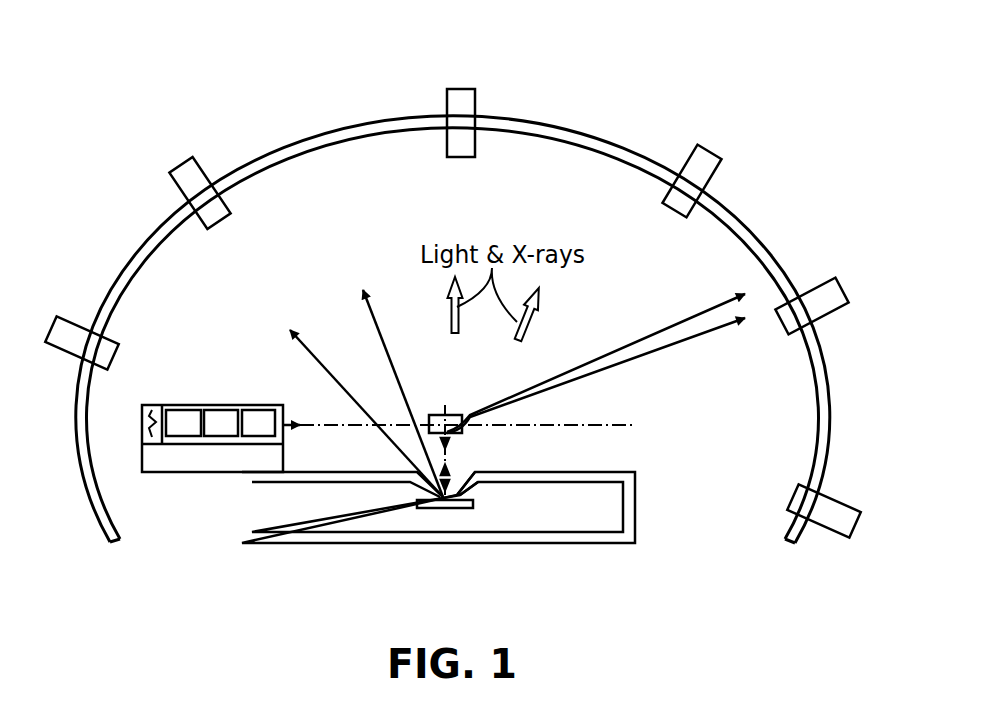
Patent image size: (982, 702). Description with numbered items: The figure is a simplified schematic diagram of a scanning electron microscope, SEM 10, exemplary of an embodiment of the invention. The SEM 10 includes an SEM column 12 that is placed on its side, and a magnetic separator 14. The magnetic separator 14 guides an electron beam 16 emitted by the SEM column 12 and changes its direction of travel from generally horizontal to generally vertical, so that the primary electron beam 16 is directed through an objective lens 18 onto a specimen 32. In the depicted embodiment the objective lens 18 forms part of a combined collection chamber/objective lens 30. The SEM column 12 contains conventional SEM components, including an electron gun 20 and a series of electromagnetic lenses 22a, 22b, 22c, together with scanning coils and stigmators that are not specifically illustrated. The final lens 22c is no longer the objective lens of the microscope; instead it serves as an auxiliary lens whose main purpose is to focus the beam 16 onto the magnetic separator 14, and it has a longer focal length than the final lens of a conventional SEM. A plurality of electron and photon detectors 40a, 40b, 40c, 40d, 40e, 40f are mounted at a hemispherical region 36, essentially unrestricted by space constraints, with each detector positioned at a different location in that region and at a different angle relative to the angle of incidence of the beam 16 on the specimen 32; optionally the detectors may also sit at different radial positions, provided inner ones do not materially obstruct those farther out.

The SEM 10 is at (163, 80).
The SEM column 12 is at (185, 457).
The magnetic separator 14 is at (462, 433).
The electron beam 16 is at (400, 428).
The objective lens 18 is at (463, 491).
The electron gun 20 is at (150, 411).
The electromagnetic lens 22a is at (183, 420).
The electromagnetic lens 22b is at (228, 420).
The final lens 22c is at (255, 422).
The combined collection chamber/objective lens 30 is at (608, 505).
The specimen 32 is at (417, 502).
The hemispherical region 36 is at (828, 395).
The detector 40a is at (68, 327).
The detector 40b is at (187, 173).
The detector 40c is at (463, 98).
The detector 40d is at (705, 160).
The detector 40e is at (820, 293).
The detector 40f is at (837, 515).